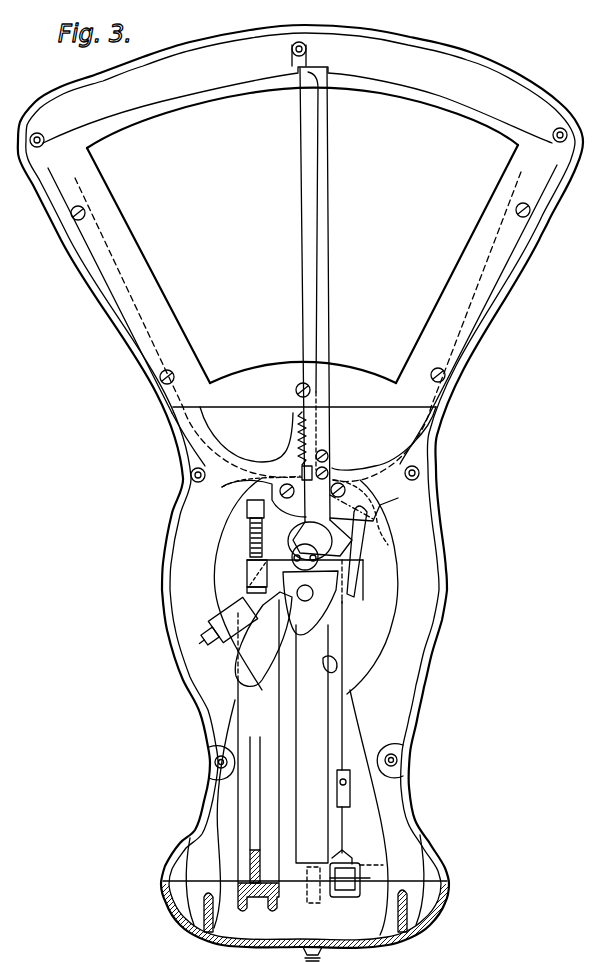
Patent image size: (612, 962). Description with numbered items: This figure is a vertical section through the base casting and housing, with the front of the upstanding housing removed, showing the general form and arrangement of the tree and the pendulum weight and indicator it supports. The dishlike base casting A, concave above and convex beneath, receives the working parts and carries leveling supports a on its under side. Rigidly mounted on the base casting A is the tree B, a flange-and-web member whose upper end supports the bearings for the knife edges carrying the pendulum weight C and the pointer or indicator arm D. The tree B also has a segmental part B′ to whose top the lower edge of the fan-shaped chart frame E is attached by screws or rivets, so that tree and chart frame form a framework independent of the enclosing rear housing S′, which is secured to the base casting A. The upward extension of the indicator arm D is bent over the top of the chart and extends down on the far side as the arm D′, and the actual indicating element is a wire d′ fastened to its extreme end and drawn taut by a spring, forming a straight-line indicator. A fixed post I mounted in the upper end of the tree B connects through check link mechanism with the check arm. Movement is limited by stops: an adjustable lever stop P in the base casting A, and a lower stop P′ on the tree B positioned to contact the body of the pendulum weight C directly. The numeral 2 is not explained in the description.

The base casting A is at (439, 914).
The leveling supports a is at (310, 570).
The tree B is at (288, 732).
The segmental part B′ is at (367, 540).
The pendulum weight C is at (233, 673).
The indicator arm D is at (325, 514).
The arm D′ is at (325, 66).
The wire d′ is at (305, 333).
The fan-shaped chart frame E is at (190, 425).
The pivot screw 2 is at (404, 474).
The adjustable lever stop P is at (364, 520).
The lower stop P′ is at (333, 660).
The rear housing S′ is at (373, 657).
The fixed post I is at (248, 538).